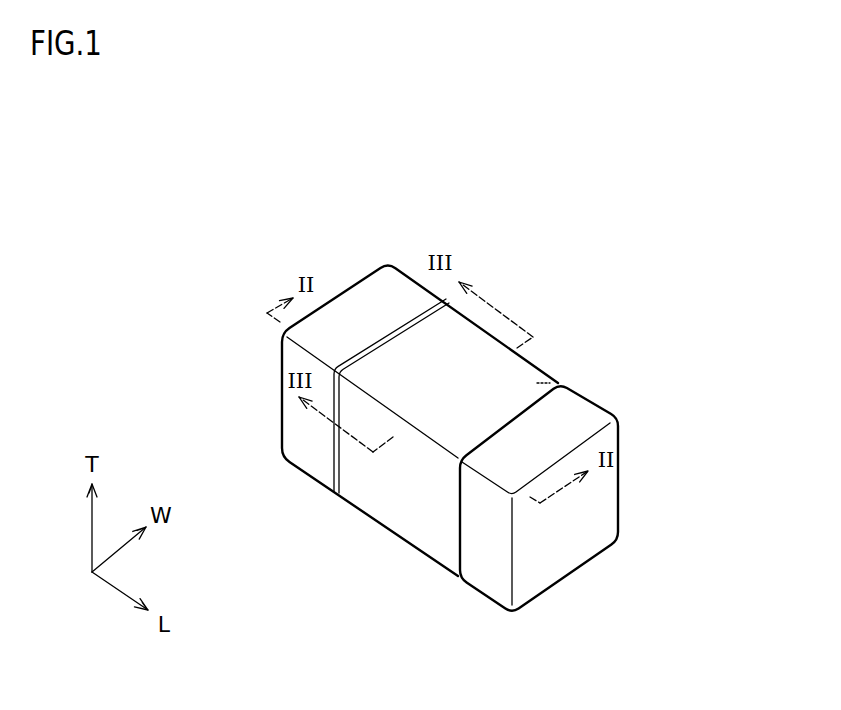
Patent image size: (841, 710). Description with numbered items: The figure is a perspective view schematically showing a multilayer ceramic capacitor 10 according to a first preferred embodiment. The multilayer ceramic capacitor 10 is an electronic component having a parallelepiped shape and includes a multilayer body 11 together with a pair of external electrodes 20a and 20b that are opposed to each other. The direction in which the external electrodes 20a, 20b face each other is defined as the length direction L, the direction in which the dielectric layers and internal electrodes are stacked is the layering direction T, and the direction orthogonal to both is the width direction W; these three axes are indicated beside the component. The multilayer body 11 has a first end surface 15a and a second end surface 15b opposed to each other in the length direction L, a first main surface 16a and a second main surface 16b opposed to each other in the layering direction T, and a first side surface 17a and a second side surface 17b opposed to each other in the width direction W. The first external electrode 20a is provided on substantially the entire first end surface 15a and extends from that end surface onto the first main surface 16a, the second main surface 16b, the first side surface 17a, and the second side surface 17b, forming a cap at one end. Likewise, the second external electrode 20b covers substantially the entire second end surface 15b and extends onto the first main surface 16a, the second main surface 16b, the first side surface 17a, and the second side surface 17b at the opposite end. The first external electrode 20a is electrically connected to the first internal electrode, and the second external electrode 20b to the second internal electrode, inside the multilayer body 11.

The multilayer ceramic capacitor 10 is at (602, 269).
The multilayer body 11 is at (413, 345).
The first end surface 15a is at (307, 432).
The second end surface 15b is at (521, 548).
The first main surface 16a is at (527, 373).
The second main surface 16b is at (438, 543).
The first side surface 17a is at (403, 505).
The second side surface 17b is at (568, 385).
The first external electrode 20a is at (370, 292).
The second external electrode 20b is at (586, 404).